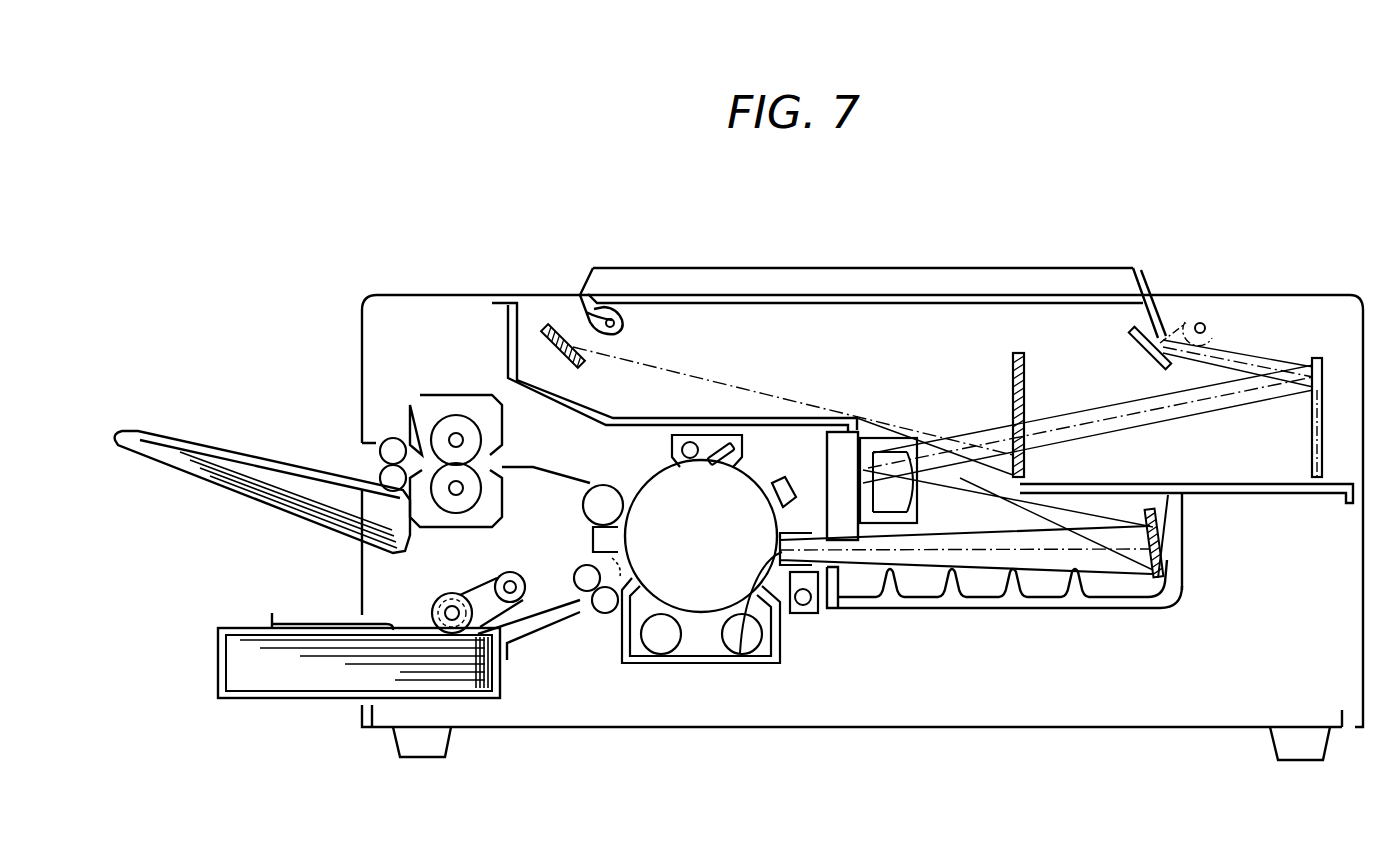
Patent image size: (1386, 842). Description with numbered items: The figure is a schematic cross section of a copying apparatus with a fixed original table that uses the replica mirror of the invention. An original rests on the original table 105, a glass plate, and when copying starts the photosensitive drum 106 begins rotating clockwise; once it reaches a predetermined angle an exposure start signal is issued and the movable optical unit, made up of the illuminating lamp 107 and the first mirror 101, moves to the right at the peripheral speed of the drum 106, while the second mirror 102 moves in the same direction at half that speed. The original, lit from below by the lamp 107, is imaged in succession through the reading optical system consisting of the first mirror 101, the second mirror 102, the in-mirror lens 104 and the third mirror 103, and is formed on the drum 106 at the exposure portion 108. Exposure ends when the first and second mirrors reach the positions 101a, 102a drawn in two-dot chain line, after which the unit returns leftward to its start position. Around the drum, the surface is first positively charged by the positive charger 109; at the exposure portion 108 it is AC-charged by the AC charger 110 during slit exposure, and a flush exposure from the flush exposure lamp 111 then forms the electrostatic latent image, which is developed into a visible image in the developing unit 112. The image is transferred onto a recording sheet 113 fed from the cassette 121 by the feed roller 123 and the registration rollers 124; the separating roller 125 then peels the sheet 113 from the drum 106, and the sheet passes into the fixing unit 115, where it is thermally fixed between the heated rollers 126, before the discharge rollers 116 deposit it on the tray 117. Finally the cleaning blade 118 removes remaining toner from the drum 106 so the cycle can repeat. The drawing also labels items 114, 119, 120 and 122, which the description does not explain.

The first mirror 101 is at (545, 340).
The first mirror end position 101a is at (1157, 343).
The second mirror 102 is at (1022, 352).
The second mirror end position 102a is at (1323, 365).
The third mirror 103 is at (1160, 556).
The in-mirror lens 104 is at (882, 440).
The original table 105 is at (728, 294).
The photosensitive drum 106 is at (651, 481).
The illuminating lamp 107 is at (588, 312).
The exposure portion 108 is at (742, 656).
The positive charger 109 is at (788, 474).
The AC charger 110 is at (832, 570).
The flush exposure lamp 111 is at (801, 614).
The developing unit 112 is at (698, 647).
The recording sheet 113 is at (330, 647).
The registration roller 114 is at (585, 538).
The fixing unit 115 is at (413, 397).
The discharge rollers 116 is at (383, 455).
The tray 117 is at (198, 447).
The cleaning blade 118 is at (719, 448).
The platen glass 119 is at (804, 283).
The light source unit 120 is at (843, 437).
The cassette 121 is at (232, 698).
The paper guide plate 122 is at (233, 628).
The feed roller 123 is at (462, 634).
The registration rollers 124 is at (607, 614).
The separating roller 125 is at (590, 515).
The heated rollers 126 is at (457, 416).